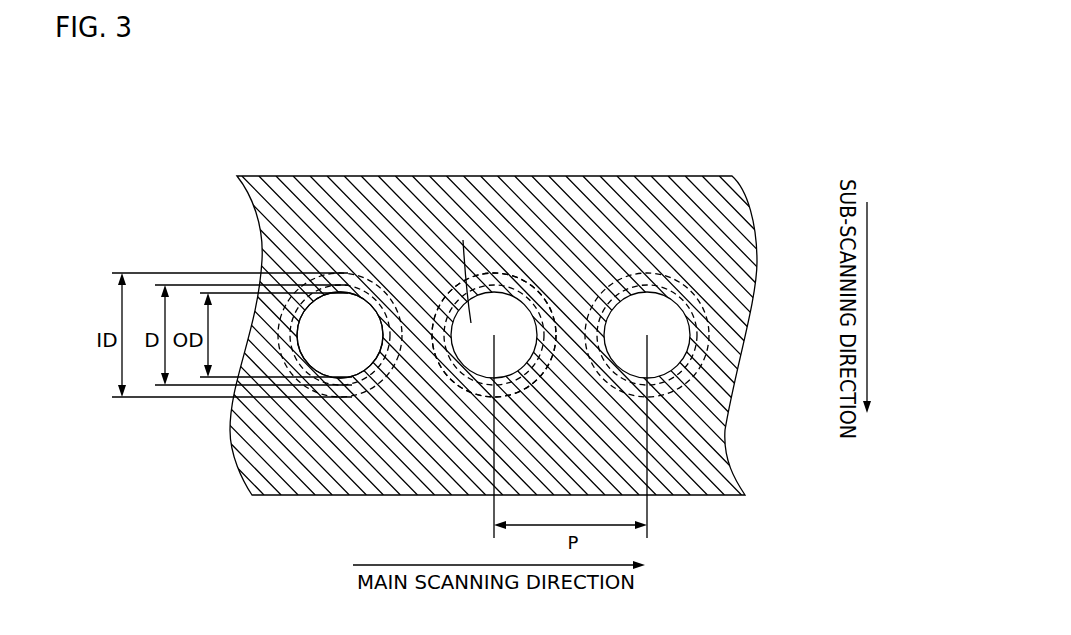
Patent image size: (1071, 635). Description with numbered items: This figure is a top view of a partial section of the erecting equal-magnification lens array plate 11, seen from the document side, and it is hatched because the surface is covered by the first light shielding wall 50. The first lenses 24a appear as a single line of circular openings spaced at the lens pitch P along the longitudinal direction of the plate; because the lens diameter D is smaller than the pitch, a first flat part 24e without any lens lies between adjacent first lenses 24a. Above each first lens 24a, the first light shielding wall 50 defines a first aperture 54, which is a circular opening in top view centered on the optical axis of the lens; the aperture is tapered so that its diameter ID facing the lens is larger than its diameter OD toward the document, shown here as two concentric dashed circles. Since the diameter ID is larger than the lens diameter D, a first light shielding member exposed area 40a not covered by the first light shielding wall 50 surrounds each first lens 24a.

The erecting equal-magnification lens array plate 11 is at (653, 146).
The first light shielding wall 50 is at (565, 222).
The first light shielding member exposed area 40a is at (338, 292).
The first lens 24a is at (365, 332).
The first aperture 54 is at (368, 302).
The first flat part 24e is at (431, 318).